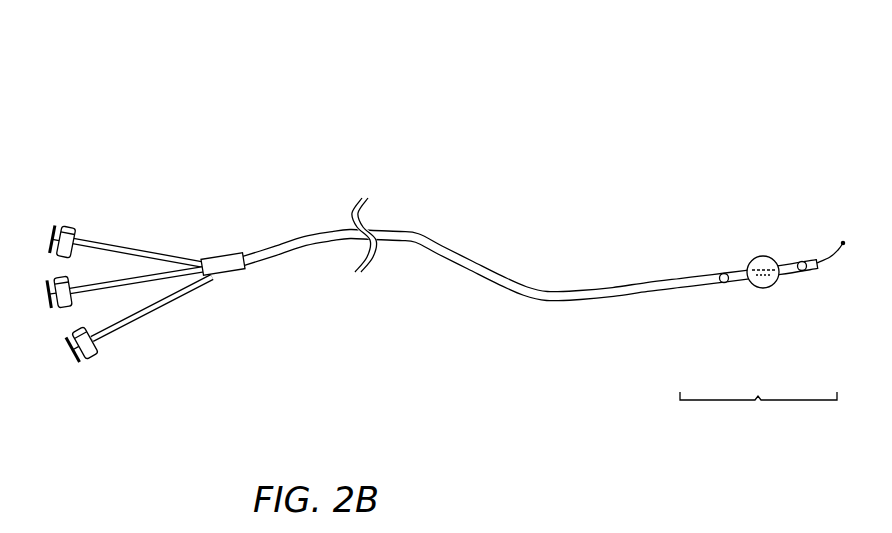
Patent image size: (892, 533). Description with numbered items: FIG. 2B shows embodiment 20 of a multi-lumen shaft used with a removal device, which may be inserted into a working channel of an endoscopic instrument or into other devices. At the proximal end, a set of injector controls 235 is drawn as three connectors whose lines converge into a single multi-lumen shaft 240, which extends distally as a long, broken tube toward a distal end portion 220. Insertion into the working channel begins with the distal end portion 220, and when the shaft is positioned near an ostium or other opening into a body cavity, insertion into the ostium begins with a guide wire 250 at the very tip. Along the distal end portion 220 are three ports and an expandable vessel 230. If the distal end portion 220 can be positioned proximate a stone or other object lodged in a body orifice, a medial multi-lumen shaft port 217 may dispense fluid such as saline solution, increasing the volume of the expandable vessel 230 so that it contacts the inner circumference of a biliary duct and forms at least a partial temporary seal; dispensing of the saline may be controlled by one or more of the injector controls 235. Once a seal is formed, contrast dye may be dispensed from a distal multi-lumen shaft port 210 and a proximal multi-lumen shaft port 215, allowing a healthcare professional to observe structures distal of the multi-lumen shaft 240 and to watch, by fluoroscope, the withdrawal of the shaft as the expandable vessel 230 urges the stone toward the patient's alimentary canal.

The embodiment 20 is at (56, 47).
The injector controls 235 is at (35, 293).
The multi-lumen shaft 240 is at (687, 280).
The proximal multi-lumen shaft port 215 is at (727, 276).
The expandable vessel 230 is at (762, 289).
The medial multi-lumen shaft port 217 is at (760, 270).
The distal multi-lumen shaft port 210 is at (802, 264).
The guide wire 250 is at (827, 247).
The distal end portion 220 is at (758, 414).